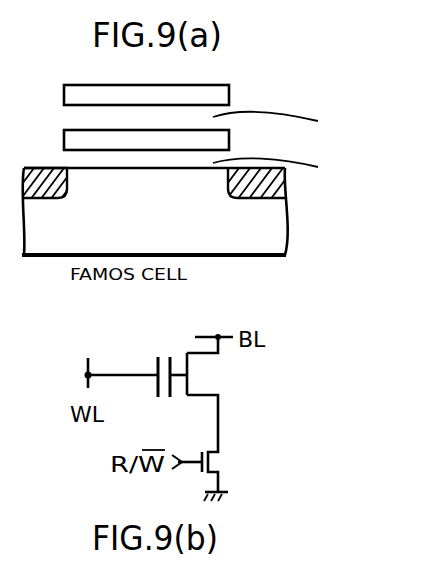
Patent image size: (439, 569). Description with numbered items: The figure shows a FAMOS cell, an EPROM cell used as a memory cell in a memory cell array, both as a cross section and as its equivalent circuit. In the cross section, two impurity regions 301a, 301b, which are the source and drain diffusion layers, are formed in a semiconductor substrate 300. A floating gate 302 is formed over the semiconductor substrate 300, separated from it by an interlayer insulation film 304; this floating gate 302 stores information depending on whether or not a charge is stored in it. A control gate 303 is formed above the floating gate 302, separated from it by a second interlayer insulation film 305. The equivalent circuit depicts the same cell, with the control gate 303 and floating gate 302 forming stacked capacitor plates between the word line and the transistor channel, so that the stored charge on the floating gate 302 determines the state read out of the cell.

In FIG. 9A, the semiconductor substrate 300 is at (275, 232).
In FIG. 9A, the impurity region 301a is at (49, 186).
In FIG. 9A, the impurity region 301b is at (282, 184).
In FIG. 9A, the floating gate 302 is at (229, 136).
In FIG. 9B, the floating gate 302 is at (177, 338).
In FIG. 9A, the control gate 303 is at (229, 91).
In FIG. 9B, the control gate 303 is at (155, 362).
In FIG. 9A, the interlayer insulation film 304 is at (290, 164).
In FIG. 9A, the interlayer insulation film 305 is at (290, 119).